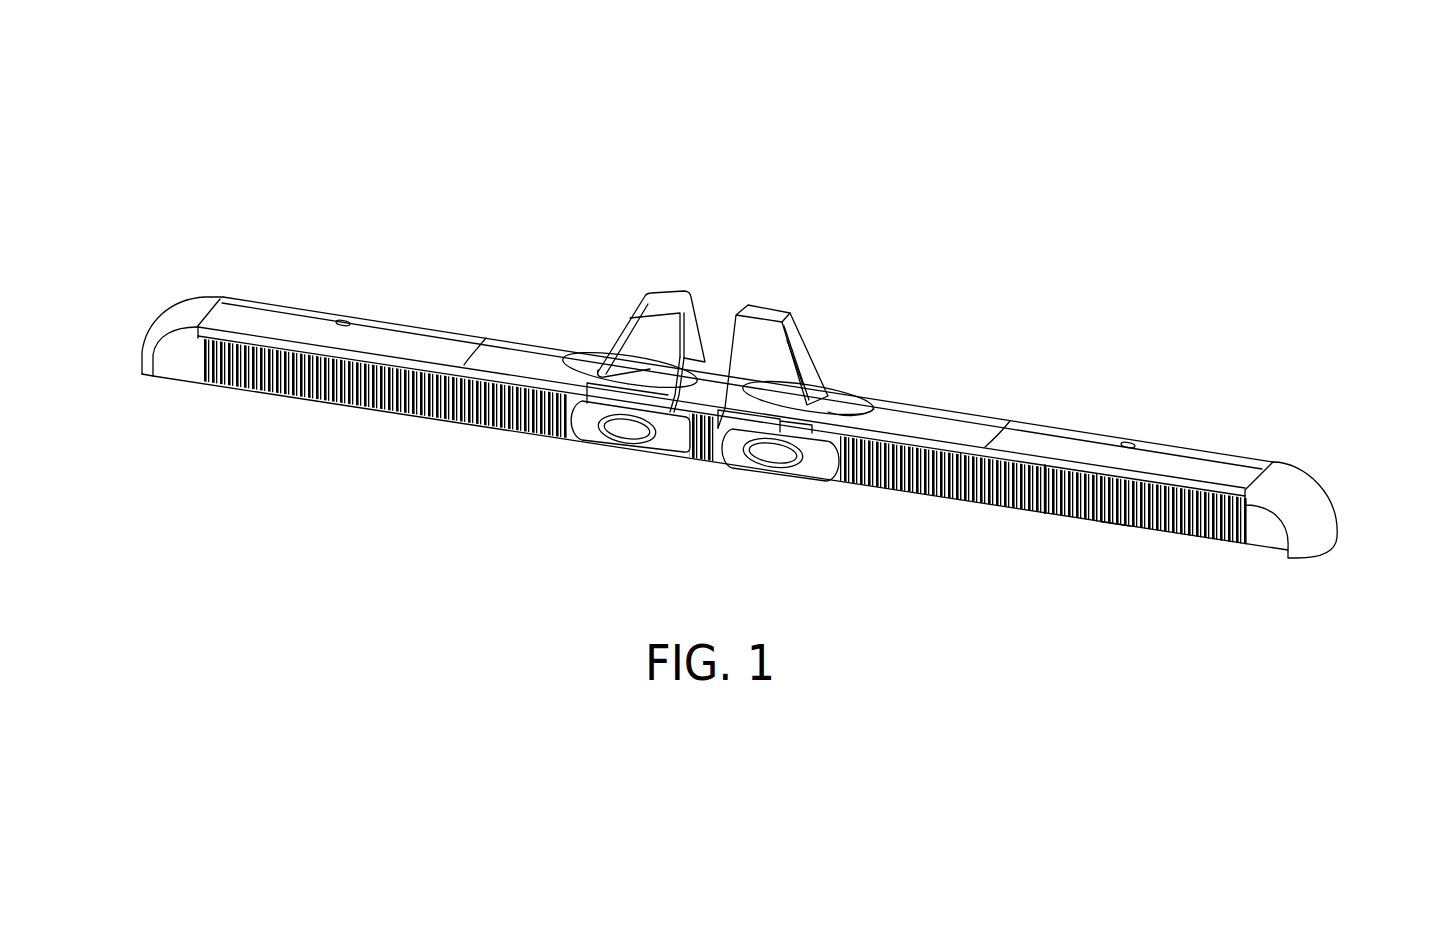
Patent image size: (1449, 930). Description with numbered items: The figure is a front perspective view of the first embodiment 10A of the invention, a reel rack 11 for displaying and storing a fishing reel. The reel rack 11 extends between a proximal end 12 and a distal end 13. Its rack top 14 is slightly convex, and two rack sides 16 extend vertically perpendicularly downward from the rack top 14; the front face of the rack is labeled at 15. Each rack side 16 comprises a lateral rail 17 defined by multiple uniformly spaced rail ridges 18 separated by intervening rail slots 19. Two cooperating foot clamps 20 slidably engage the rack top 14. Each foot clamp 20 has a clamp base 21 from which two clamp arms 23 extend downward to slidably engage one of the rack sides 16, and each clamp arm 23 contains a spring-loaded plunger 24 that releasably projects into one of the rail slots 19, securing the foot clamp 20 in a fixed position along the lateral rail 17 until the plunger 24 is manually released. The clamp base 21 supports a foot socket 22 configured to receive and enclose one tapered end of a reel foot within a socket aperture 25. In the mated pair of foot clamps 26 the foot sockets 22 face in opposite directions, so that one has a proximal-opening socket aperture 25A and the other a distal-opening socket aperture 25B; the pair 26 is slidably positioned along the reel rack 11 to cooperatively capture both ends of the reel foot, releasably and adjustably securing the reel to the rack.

The first embodiment 10A is at (1152, 260).
The reel rack 11 is at (1170, 387).
The proximal end 12 is at (1354, 473).
The distal end 13 is at (150, 292).
The rack top 14 is at (466, 315).
The front ribbed surface 15 is at (380, 428).
The rack sides 16 is at (952, 505).
The lateral rail 17 is at (1042, 500).
The rail ridges 18 is at (1095, 523).
The rail slots 19 is at (1113, 525).
The foot clamps 20 is at (665, 358).
The clamp base 21 is at (593, 358).
The foot socket 22 is at (640, 318).
The clamp arms 23 is at (666, 470).
The spring-loaded plunger 24 is at (626, 440).
The socket aperture 25 is at (708, 300).
The proximal-opening socket aperture 25A is at (686, 330).
The distal-opening socket aperture 25B is at (782, 320).
The mated pair of foot clamps 26 is at (714, 177).